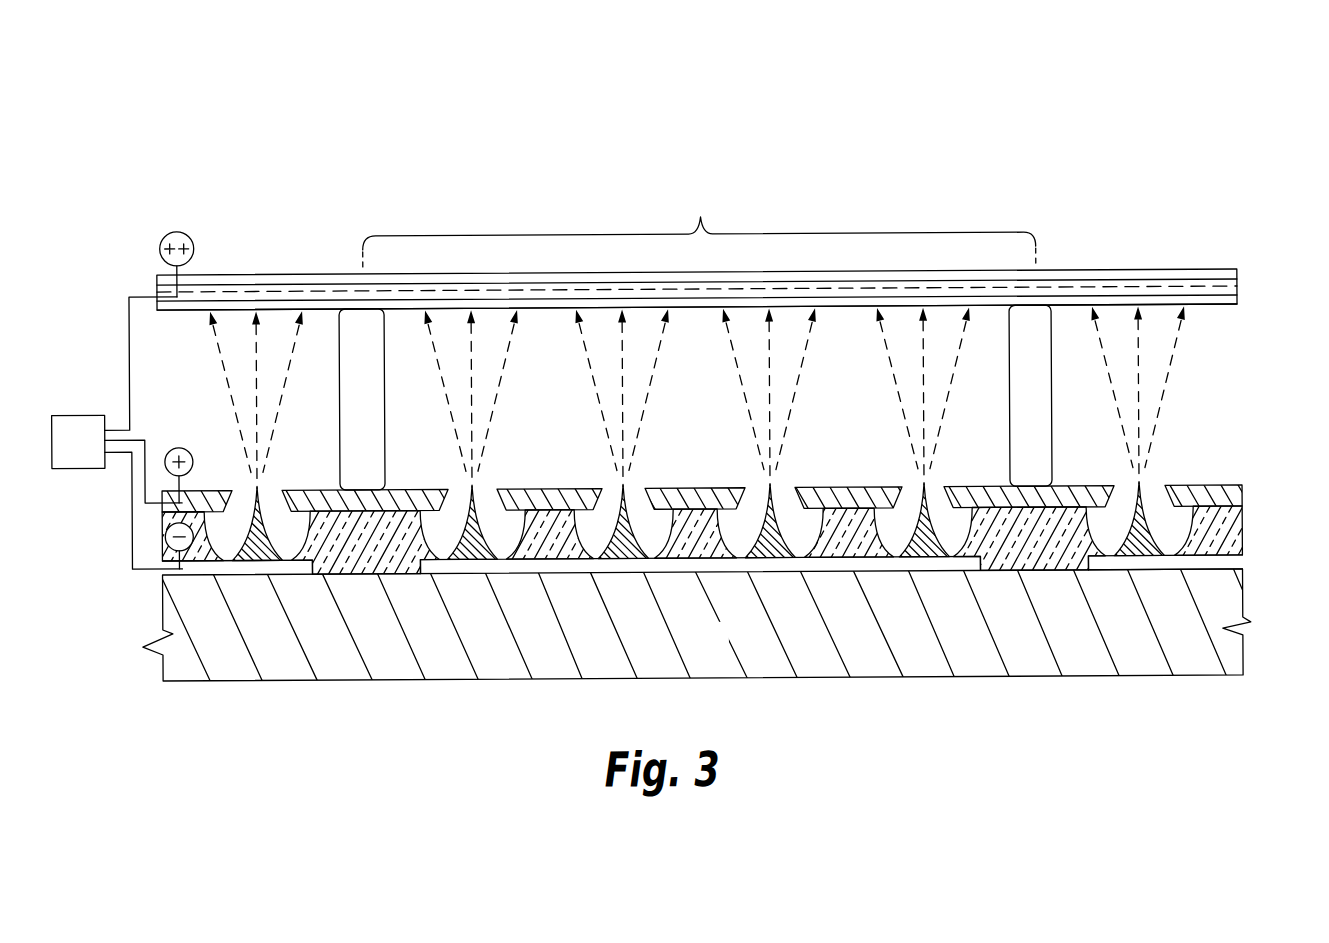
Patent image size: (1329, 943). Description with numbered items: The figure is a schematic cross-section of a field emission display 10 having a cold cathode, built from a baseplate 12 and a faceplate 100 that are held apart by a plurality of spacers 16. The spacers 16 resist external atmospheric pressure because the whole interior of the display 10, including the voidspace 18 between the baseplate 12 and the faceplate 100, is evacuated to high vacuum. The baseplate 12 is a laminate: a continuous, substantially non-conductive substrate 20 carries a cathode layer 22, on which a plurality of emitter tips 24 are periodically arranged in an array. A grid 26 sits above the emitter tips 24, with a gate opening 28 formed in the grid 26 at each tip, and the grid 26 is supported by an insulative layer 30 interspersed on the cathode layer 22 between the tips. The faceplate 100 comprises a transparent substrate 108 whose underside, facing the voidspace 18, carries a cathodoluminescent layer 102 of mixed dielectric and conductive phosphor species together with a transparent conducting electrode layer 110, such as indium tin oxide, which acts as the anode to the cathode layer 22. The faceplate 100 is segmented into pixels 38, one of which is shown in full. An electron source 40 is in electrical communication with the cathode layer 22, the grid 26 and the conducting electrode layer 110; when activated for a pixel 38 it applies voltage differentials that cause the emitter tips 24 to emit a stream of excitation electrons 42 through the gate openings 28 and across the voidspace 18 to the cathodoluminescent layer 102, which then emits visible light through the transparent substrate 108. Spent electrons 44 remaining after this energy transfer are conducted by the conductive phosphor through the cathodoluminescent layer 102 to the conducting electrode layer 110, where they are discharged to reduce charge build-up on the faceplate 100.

The field emission display 10 is at (520, 121).
The baseplate 12 is at (679, 553).
The spacers 16 is at (350, 397).
The voidspace 18 is at (1197, 390).
The substrate 20 is at (724, 652).
The cathode layer 22 is at (1232, 562).
The emitter tips 24 is at (1158, 585).
The grid 26 is at (1242, 493).
The gate opening 28 is at (1155, 488).
The insulative layer 30 is at (1230, 534).
The pixel 38 is at (698, 225).
The electron source 40 is at (64, 453).
The excitation electrons 42 is at (922, 371).
The spent electrons 44 is at (1095, 288).
The faceplate 100 is at (689, 272).
The cathodoluminescent layer 102 is at (1237, 301).
The transparent substrate 108 is at (1212, 273).
The transparent conducting electrode layer 110 is at (1235, 286).